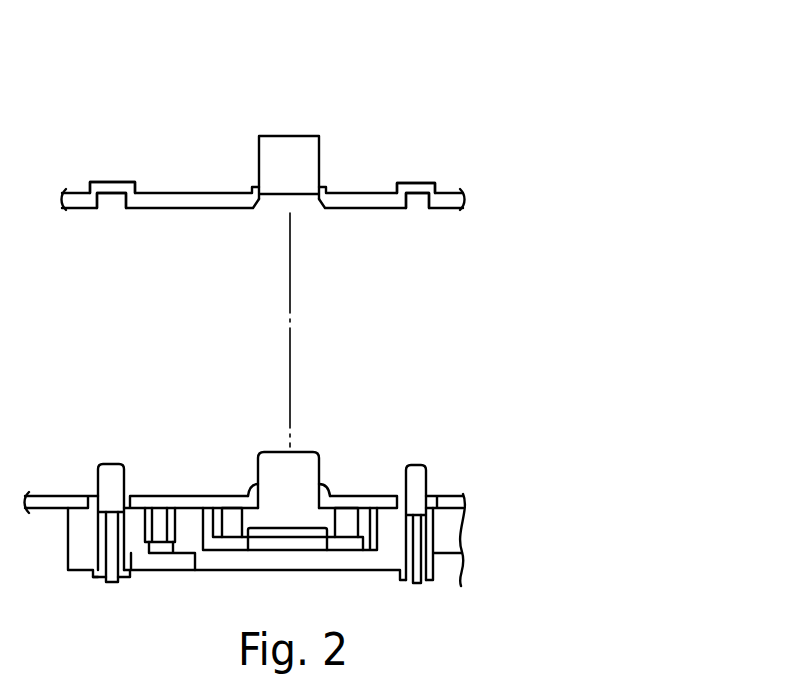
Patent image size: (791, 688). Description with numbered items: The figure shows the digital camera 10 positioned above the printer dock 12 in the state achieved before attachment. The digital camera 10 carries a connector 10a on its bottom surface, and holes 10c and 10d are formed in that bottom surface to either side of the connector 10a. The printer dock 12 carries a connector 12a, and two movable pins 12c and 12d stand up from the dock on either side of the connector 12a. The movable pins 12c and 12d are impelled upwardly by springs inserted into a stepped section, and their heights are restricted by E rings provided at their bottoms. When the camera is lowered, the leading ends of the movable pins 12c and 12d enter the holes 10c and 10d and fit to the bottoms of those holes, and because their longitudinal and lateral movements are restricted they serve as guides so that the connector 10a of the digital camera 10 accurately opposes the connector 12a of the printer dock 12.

The digital camera 10 is at (360, 153).
The connector 10a is at (310, 136).
The hole 10c is at (111, 208).
The hole 10d is at (417, 200).
The printer dock 12 is at (488, 528).
The connector 12a is at (303, 452).
The movable pin 12c is at (115, 470).
The movable pin 12d is at (418, 467).